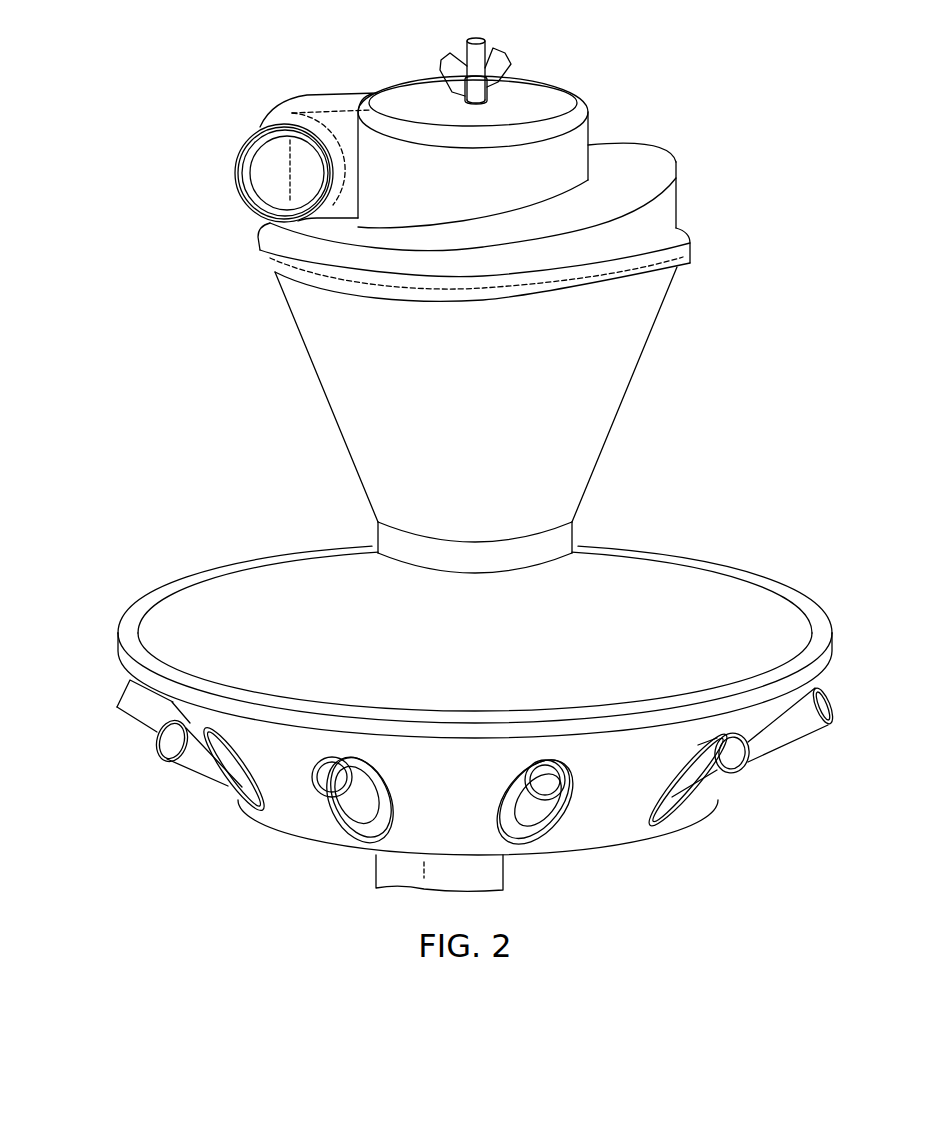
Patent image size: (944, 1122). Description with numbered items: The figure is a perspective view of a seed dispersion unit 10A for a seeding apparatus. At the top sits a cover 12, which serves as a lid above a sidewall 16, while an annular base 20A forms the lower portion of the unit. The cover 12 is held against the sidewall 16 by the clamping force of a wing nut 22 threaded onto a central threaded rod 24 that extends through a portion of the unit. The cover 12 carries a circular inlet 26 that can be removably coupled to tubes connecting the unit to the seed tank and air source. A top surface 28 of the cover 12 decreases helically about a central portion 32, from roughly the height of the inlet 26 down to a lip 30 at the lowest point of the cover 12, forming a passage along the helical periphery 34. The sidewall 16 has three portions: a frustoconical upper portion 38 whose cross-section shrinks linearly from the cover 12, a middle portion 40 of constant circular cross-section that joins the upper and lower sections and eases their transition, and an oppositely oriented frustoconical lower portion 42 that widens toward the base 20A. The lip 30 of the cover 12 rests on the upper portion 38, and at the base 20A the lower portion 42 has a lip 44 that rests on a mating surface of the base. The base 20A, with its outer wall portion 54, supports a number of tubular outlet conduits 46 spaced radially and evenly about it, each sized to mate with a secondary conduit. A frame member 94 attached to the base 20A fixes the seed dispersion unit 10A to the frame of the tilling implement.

The seed dispersion unit 10A is at (113, 100).
The cover 12 is at (637, 147).
The sidewall 16 is at (612, 388).
The annular base 20A is at (617, 840).
The wing nut 22 is at (499, 60).
The central threaded rod 24 is at (471, 52).
The inlet 26 is at (243, 172).
The top surface 28 is at (377, 88).
The lip 30 is at (688, 236).
The central portion 32 is at (573, 147).
The helical periphery 34 is at (667, 203).
The upper portion 38 is at (588, 462).
The middle portion 40 is at (558, 538).
The lower portion 42 is at (700, 578).
The lip 44 is at (450, 802).
The outlet conduits 46 is at (198, 767).
The outer wall portion 54 is at (452, 806).
The frame member 94 is at (490, 873).